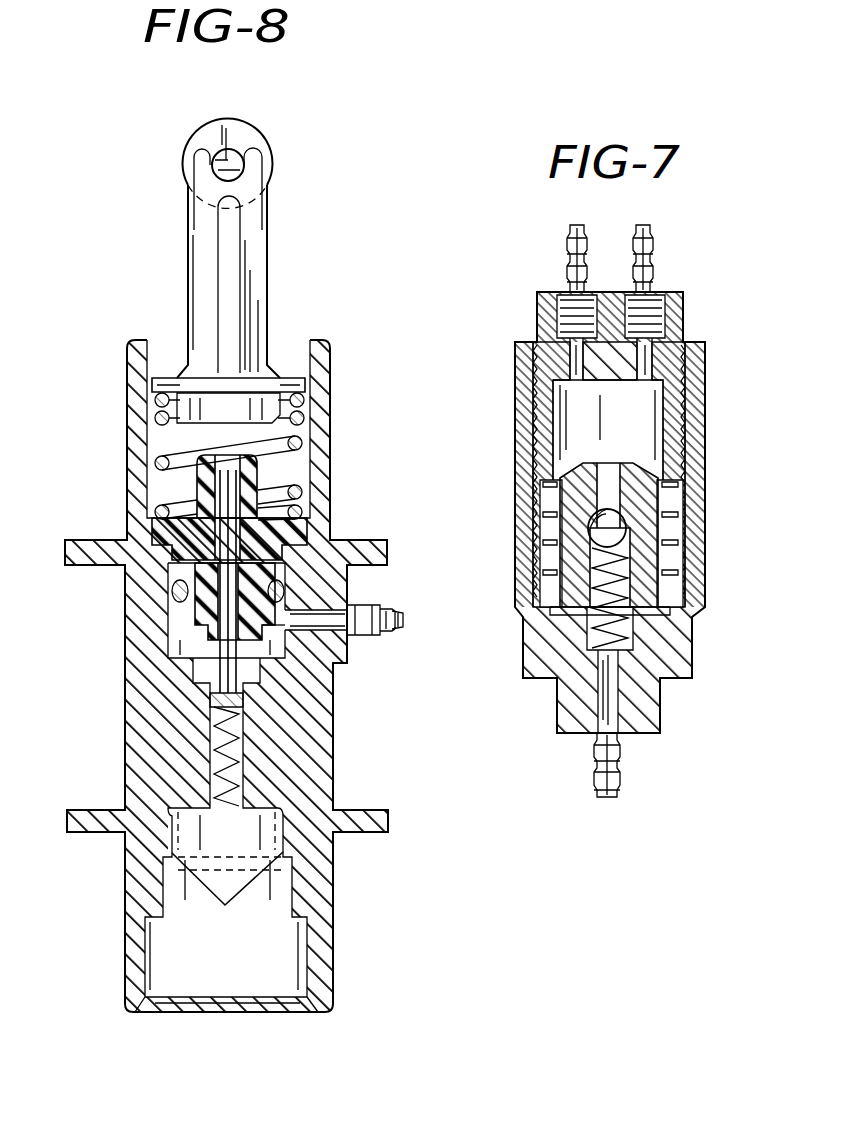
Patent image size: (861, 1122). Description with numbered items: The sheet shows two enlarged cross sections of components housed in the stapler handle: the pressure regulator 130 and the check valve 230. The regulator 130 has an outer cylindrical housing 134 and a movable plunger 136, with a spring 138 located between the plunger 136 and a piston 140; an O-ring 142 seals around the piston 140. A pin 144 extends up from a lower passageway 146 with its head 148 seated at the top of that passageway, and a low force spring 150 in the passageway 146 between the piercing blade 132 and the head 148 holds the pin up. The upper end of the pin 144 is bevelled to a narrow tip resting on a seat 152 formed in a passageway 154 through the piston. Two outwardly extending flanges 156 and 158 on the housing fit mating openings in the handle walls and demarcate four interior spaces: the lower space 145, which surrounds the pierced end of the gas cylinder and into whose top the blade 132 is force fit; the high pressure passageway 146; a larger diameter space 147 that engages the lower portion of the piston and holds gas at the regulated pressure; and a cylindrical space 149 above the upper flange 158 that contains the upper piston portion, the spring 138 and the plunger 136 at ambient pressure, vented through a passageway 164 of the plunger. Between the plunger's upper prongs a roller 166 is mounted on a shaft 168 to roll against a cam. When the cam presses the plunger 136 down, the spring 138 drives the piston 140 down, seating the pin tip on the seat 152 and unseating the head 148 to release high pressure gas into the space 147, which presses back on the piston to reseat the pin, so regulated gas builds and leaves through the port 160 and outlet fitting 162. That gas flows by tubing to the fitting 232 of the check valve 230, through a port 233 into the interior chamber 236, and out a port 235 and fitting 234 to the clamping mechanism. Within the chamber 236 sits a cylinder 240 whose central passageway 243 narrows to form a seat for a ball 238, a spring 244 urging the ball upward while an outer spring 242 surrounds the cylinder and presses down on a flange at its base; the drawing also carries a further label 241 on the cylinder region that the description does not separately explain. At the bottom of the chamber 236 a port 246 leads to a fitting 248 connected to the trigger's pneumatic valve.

In FIG. 8, the regulator 130 is at (110, 340).
In FIG. 8, the piercing blade 132 is at (205, 915).
In FIG. 8, the outer cylindrical housing 134 is at (125, 745).
In FIG. 8, the movable plunger 136 is at (268, 292).
In FIG. 8, the spring 138 is at (300, 458).
In FIG. 8, the piston 140 is at (305, 528).
In FIG. 8, the O-ring 142 is at (172, 593).
In FIG. 8, the pin 144 is at (195, 662).
In FIG. 8, the lower space 145 is at (272, 858).
In FIG. 8, the lower passageway 146 is at (236, 735).
In FIG. 8, the larger diameter space 147 is at (185, 635).
In FIG. 8, the head 148 is at (242, 718).
In FIG. 8, the cylindrical space 149 is at (175, 488).
In FIG. 8, the low force spring 150 is at (242, 775).
In FIG. 8, the seat 152 is at (290, 498).
In FIG. 8, the passageway 154 is at (285, 636).
In FIG. 8, the lower flange 156 is at (75, 836).
In FIG. 8, the upper flange 158 is at (75, 568).
In FIG. 8, the port 160 is at (315, 616).
In FIG. 8, the outlet fitting 162 is at (400, 620).
In FIG. 8, the passageway 164 is at (205, 415).
In FIG. 8, the roller 166 is at (255, 125).
In FIG. 8, the shaft 168 is at (244, 165).
In FIG. 7, the check valve 230 is at (492, 434).
In FIG. 7, the fitting 232 is at (567, 235).
In FIG. 7, the port 233 is at (570, 355).
In FIG. 7, the fitting 234 is at (655, 247).
In FIG. 7, the port 235 is at (652, 362).
In FIG. 7, the interior chamber 236 is at (645, 405).
In FIG. 7, the ball 238 is at (625, 535).
In FIG. 7, the cylinder 240 is at (680, 500).
In FIG. 7, the valve seat 241 is at (590, 525).
In FIG. 7, the outer spring 242 is at (548, 505).
In FIG. 7, the central passageway 243 is at (600, 470).
In FIG. 7, the spring 244 is at (620, 640).
In FIG. 7, the port 246 is at (605, 665).
In FIG. 7, the fitting 248 is at (620, 780).